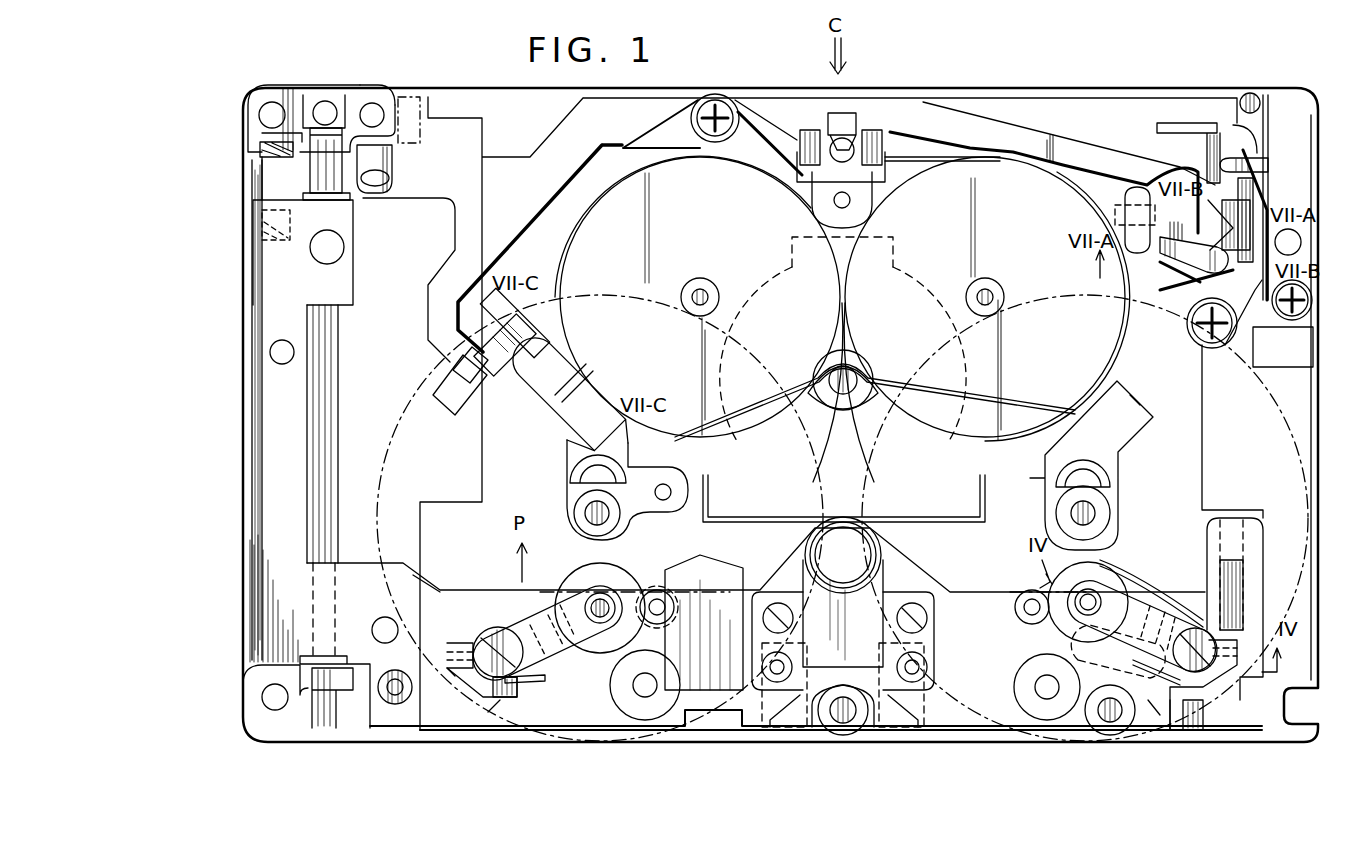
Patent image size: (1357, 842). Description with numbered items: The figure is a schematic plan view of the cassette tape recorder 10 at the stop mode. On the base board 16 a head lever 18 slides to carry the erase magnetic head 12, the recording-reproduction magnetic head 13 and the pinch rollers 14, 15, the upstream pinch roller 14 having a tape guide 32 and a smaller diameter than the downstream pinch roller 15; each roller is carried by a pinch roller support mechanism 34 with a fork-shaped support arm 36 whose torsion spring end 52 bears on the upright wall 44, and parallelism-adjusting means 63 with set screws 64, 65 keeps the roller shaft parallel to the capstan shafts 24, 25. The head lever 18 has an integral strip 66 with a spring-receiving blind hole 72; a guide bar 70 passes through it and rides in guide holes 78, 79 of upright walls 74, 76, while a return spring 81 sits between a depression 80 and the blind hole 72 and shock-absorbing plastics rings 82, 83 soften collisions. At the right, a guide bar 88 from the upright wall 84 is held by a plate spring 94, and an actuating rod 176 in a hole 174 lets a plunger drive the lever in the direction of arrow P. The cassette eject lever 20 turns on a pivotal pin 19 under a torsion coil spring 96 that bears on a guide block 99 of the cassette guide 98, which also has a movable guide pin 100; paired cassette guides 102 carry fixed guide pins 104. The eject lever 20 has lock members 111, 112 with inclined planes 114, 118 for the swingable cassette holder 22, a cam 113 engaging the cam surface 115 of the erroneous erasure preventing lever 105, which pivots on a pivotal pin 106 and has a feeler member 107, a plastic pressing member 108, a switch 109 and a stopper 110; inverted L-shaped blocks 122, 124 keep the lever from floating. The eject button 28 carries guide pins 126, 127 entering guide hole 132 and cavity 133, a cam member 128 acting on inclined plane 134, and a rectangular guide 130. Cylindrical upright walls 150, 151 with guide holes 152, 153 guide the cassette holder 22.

The cassette tape recorder 10 is at (1088, 89).
The erase magnetic head 12 is at (876, 585).
The recording-reproduction magnetic head 13 is at (720, 570).
The upstream pinch roller 14 is at (1050, 590).
The downstream pinch roller 15 is at (578, 590).
The base board 16 is at (1324, 440).
The head lever 18 is at (481, 582).
The pivotal pin 19 is at (713, 98).
The cassette eject lever 20 is at (1070, 142).
The cassette holder 22 is at (1206, 434).
The capstan shaft 24 is at (1095, 514).
The capstan shaft 25 is at (607, 518).
The eject button 28 is at (420, 97).
The tape guide 32 is at (1130, 580).
The pinch roller support mechanism 34 is at (555, 684).
The support arm 36 is at (540, 620).
The upright wall 44 is at (458, 680).
The other end of torsion coil spring 52 is at (535, 690).
The parallelism-adjusting means 63 is at (476, 696).
The set screw 64 is at (498, 690).
The set screw 65 is at (448, 660).
The integral strip 66 is at (262, 452).
The guide bar 70 is at (339, 384).
The spring-receiving blind hole 72 is at (262, 231).
The upright wall 74 is at (345, 92).
The upright wall 76 is at (270, 740).
The guide hole 78 is at (270, 137).
The guide hole 79 is at (342, 692).
The depression 80 is at (262, 150).
The return spring 81 is at (262, 180).
The shock-absorbing plastics ring 82 is at (352, 204).
The shock-absorbing plastics ring 83 is at (345, 660).
The upright wall 84 is at (1263, 565).
The guide bar 88 is at (1220, 592).
The plate spring 94 is at (1072, 648).
The torsion coil spring 96 is at (640, 145).
The cassette guide 98 is at (805, 100).
The guide block 99 is at (800, 150).
The guide pin 100 is at (852, 124).
The cassette guide 102 is at (612, 462).
The guide pin 104 is at (578, 483).
The erroneous erasure preventing lever 105 is at (1255, 188).
The pivotal pin 106 is at (1212, 348).
The feeler member 107 is at (1168, 133).
The plastic pressing member 108 is at (1262, 155).
The switch 109 is at (1269, 110).
The stopper 110 is at (1250, 92).
The lock member 111 is at (1187, 228).
The lock member 112 is at (548, 345).
The cam 113 is at (1227, 225).
The inclined plane 114 is at (1168, 260).
The cam surface 115 is at (1214, 220).
The inclined plane 118 is at (525, 310).
The inverted L-shaped block 122 is at (1120, 212).
The inverted L-shaped block 124 is at (456, 412).
The longer guide pin 126 is at (380, 108).
The shorter guide pin 127 is at (328, 100).
The cam member 128 is at (383, 188).
The rectangular guide 130 is at (421, 136).
The guide hole 132 is at (372, 103).
The cavity 133 is at (308, 100).
The inclined plane 134 is at (388, 148).
The cylindrical upright wall 150 is at (830, 735).
The cylindrical upright wall 151 is at (1095, 735).
The guide hole 152 is at (846, 735).
The guide hole 153 is at (1112, 735).
The hole 174 is at (390, 696).
The actuating rod 176 is at (398, 667).